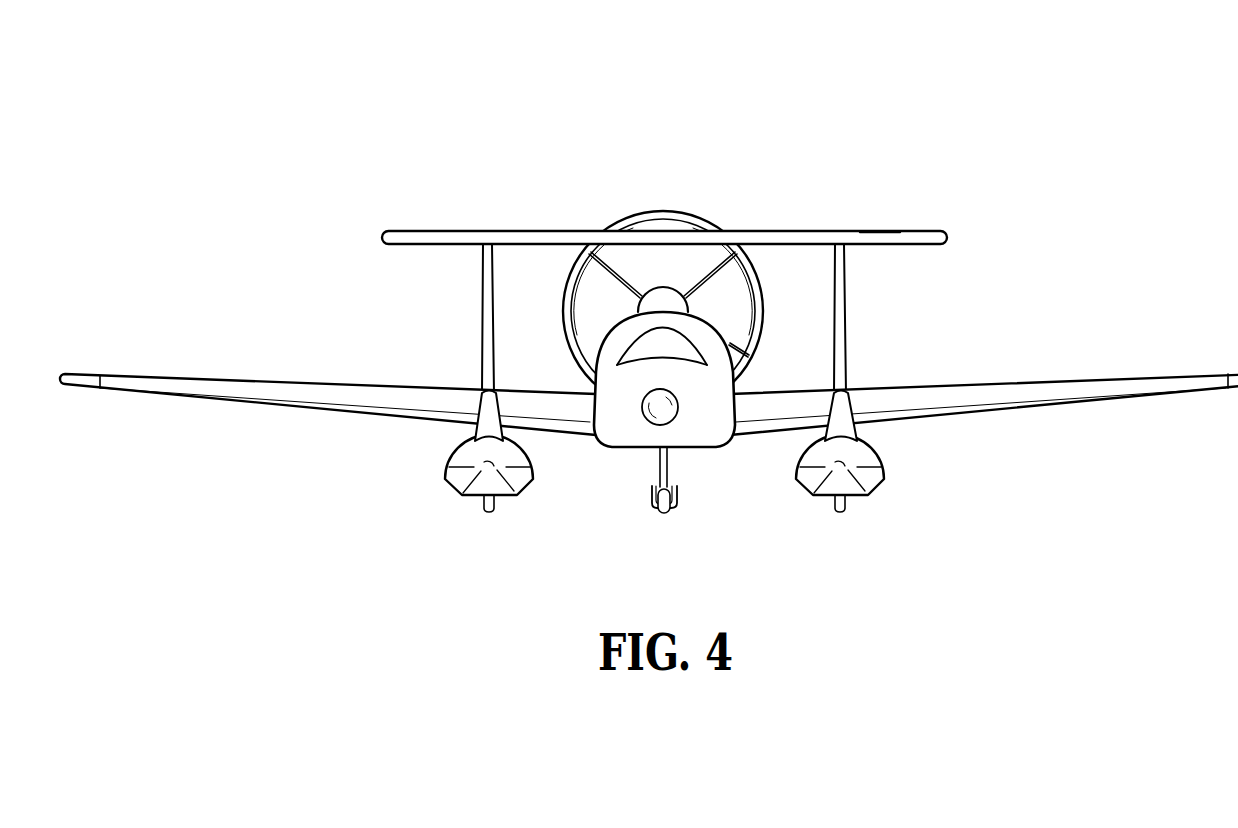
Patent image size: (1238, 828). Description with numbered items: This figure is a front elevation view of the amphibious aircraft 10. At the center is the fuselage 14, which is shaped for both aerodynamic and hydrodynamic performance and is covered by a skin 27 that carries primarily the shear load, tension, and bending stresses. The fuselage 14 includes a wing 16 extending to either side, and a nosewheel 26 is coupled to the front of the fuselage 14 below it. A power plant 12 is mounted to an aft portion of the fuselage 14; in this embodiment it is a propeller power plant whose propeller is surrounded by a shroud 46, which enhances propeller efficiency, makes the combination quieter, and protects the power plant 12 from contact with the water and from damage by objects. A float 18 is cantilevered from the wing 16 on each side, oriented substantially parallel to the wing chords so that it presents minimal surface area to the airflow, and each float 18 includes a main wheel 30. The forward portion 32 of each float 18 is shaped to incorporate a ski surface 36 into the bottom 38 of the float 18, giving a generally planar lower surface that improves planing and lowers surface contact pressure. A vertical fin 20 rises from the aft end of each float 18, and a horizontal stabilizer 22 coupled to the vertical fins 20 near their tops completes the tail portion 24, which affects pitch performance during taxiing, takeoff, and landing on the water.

The amphibious aircraft 10 is at (385, 112).
The power plant 12 is at (645, 213).
The fuselage 14 is at (585, 388).
The wing 16 is at (140, 375).
The float 18 is at (443, 448).
The vertical fin 20 is at (483, 284).
The horizontal stabilizer 22 is at (792, 232).
The tail portion 24 is at (868, 232).
The nosewheel 26 is at (665, 515).
The skin 27 is at (635, 370).
The main wheel 30 is at (490, 513).
The forward portion 32 is at (460, 487).
The ski surface 36 is at (463, 505).
The bottom 38 is at (520, 487).
The shroud 46 is at (690, 212).